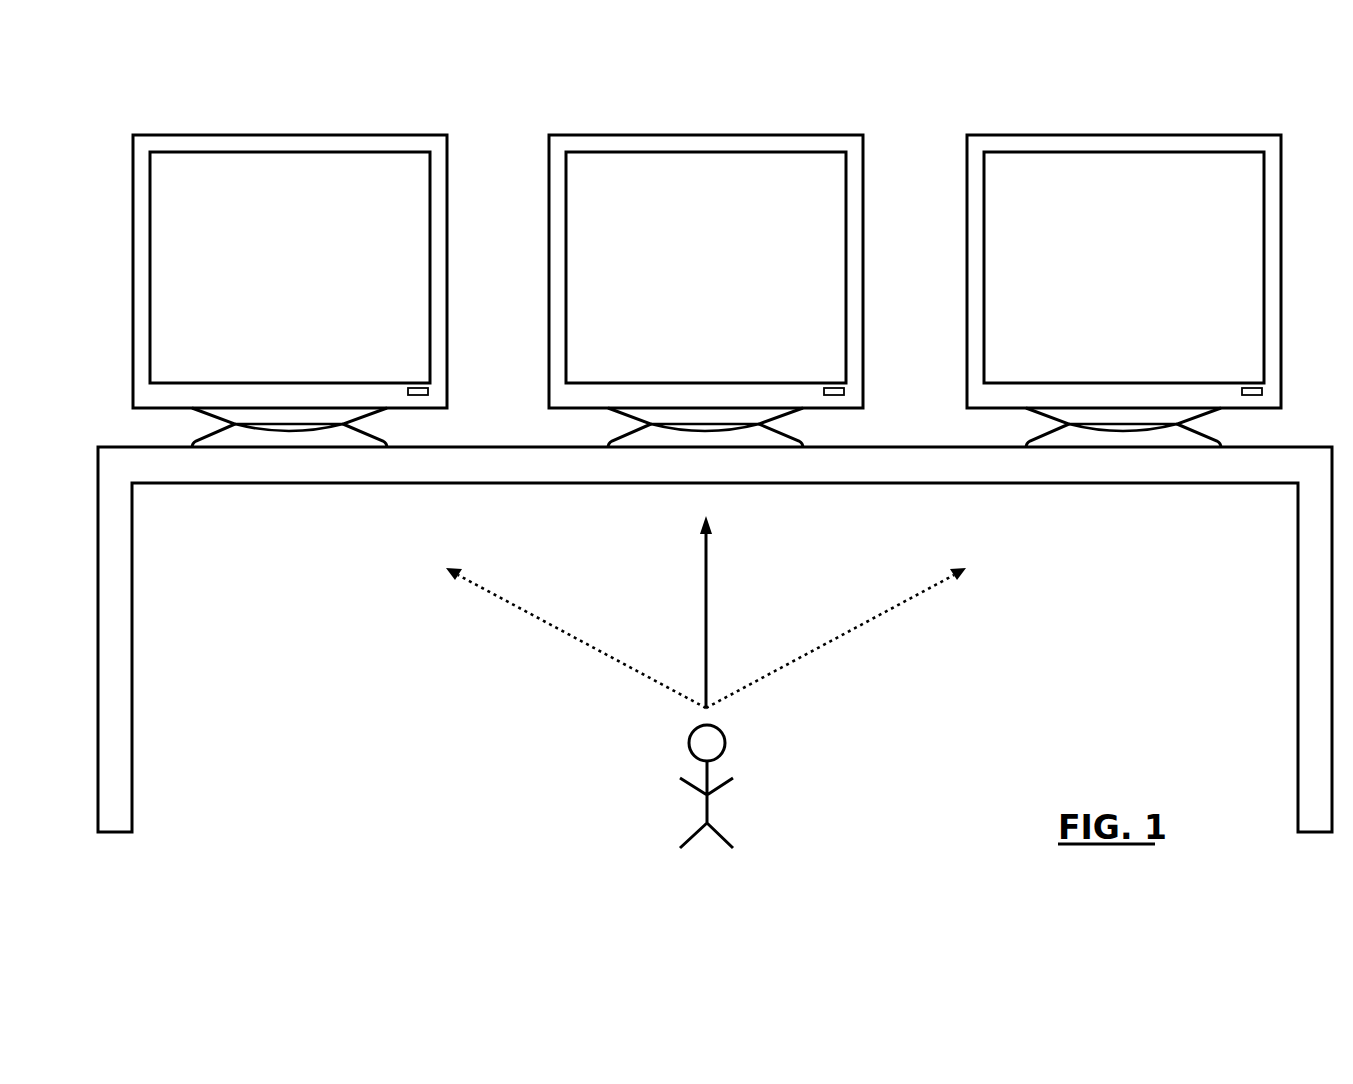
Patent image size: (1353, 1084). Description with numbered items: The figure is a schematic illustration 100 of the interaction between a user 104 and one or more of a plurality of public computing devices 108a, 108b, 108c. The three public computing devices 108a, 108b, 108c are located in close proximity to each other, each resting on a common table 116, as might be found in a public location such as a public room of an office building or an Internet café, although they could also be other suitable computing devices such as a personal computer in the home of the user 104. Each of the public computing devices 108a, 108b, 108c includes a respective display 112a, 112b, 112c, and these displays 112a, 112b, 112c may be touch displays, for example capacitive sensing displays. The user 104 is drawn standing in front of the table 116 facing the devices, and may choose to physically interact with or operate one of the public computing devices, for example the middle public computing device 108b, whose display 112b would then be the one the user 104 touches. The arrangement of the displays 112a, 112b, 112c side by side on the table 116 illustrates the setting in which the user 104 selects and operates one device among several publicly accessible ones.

The schematic illustration 100 is at (337, 869).
The user 104 is at (748, 811).
The public computing device 108a is at (290, 135).
The public computing device 108b is at (706, 135).
The public computing device 108c is at (1116, 135).
The display 112a is at (377, 205).
The display 112b is at (793, 205).
The display 112c is at (1203, 205).
The table 116 is at (115, 657).